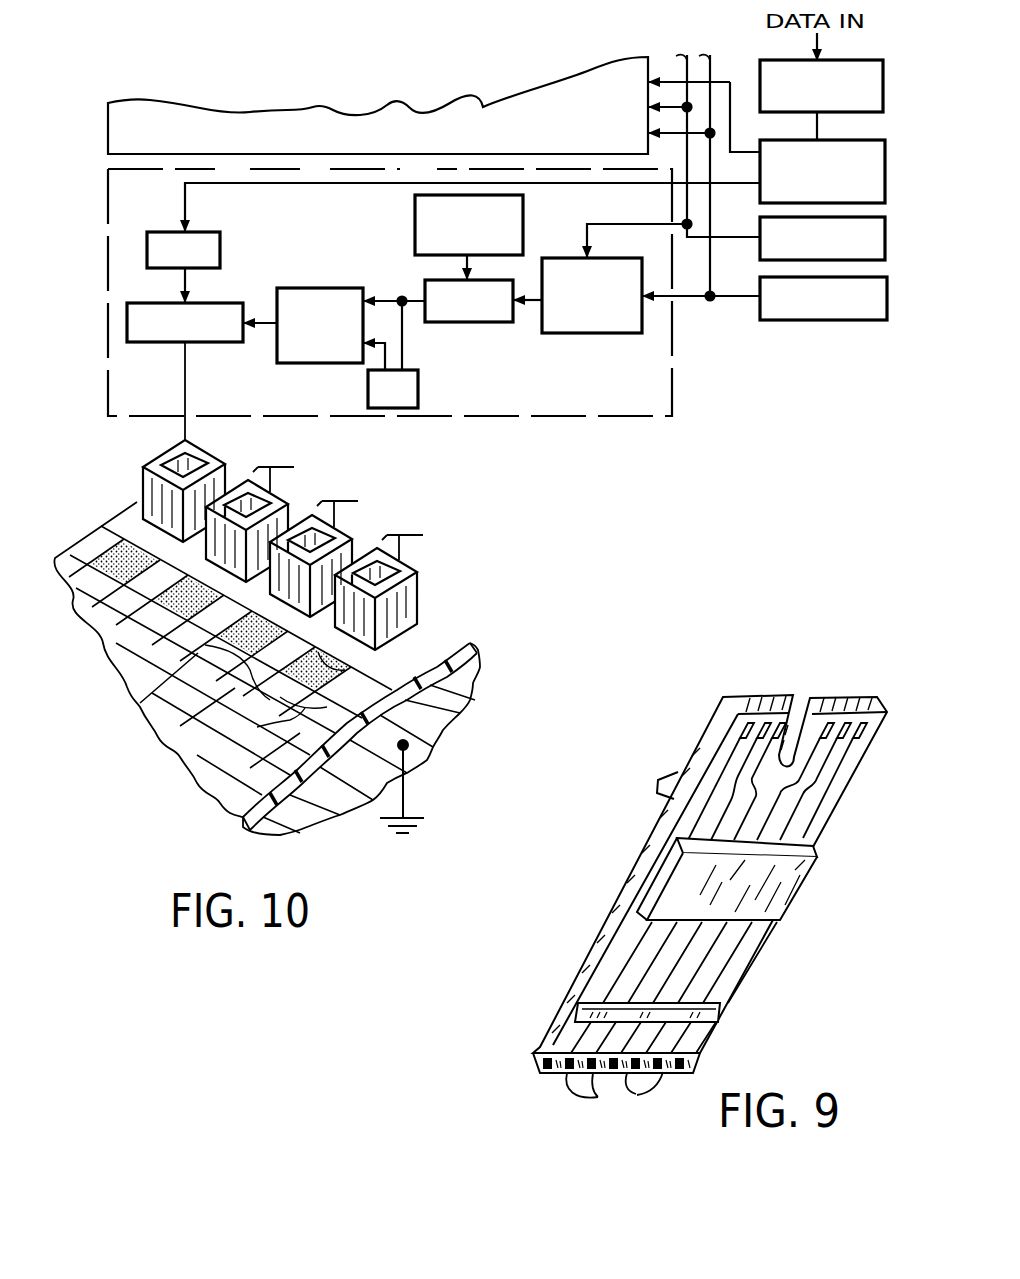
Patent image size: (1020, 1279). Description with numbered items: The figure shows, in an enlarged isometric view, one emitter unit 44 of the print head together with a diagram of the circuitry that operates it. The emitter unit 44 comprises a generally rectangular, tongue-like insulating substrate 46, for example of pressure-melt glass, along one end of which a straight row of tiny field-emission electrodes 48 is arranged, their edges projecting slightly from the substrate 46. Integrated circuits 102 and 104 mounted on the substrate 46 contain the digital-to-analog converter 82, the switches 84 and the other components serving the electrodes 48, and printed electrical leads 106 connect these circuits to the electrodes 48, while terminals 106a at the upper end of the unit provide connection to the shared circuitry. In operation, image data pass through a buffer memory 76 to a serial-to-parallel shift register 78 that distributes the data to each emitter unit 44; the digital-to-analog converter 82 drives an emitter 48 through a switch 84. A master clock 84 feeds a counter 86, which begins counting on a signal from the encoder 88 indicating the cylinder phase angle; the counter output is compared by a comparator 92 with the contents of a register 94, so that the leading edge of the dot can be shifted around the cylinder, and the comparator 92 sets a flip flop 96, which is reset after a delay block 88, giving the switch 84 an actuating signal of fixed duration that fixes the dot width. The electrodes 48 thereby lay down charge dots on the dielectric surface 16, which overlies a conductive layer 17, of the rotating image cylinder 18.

In FIG. 10, the dielectric surface 16 is at (470, 648).
In FIG. 10, the conductive layer 17 is at (310, 817).
In FIG. 10, the image cylinder 18 is at (488, 682).
In FIG. 9, the emitter unit 44 is at (727, 913).
In FIG. 10, the insulating substrate 46 is at (368, 165).
In FIG. 9, the insulating substrate 46 is at (653, 843).
In FIG. 10, the field-emission electrodes 48 is at (138, 463).
In FIG. 9, the field-emission electrodes 48 is at (614, 1101).
In FIG. 10, the buffer memory 76 is at (883, 96).
In FIG. 10, the serial-to-parallel shift register 78 is at (885, 171).
In FIG. 10, the digital-to-analog converter 82 is at (220, 252).
In FIG. 10, the switch 84 is at (887, 303).
In FIG. 10, the counter 86 is at (562, 336).
In FIG. 10, the encoder / delay 88 is at (885, 236).
In FIG. 10, the comparator 92 is at (425, 285).
In FIG. 10, the register 94 is at (415, 231).
In FIG. 10, the flip flop 96 is at (321, 288).
In FIG. 9, the integrated circuit 102 is at (712, 1020).
In FIG. 9, the integrated circuit 104 is at (803, 868).
In FIG. 10, the electrical leads 106 is at (188, 436).
In FIG. 9, the electrical leads 106 is at (718, 950).
In FIG. 9, the terminals 106a is at (847, 737).